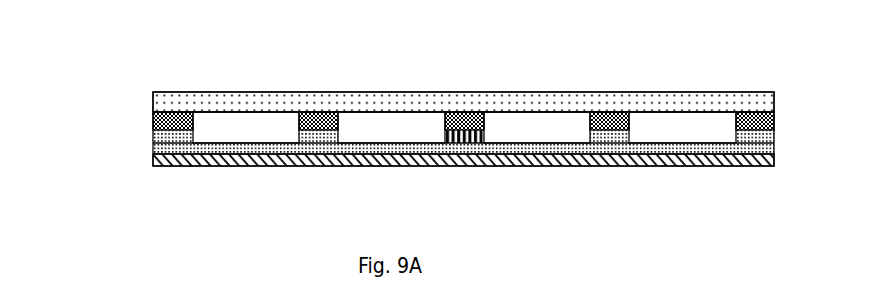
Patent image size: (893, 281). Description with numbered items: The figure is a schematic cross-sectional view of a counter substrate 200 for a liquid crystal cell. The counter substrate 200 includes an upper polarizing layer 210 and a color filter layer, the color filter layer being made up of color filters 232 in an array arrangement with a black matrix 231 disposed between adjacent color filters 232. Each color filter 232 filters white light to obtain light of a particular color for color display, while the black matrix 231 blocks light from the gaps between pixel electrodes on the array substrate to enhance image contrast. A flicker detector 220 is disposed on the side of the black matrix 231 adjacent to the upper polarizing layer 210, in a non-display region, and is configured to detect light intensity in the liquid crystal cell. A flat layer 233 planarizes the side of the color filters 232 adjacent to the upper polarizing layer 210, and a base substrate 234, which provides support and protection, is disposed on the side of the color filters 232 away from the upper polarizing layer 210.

The counter substrate 200 is at (753, 78).
The upper polarizing layer 210 is at (153, 158).
The flicker detector 220 is at (464, 137).
The black matrix 231 is at (153, 120).
The color filter 232 is at (246, 127).
The flat layer 233 is at (153, 148).
The base substrate 234 is at (153, 102).